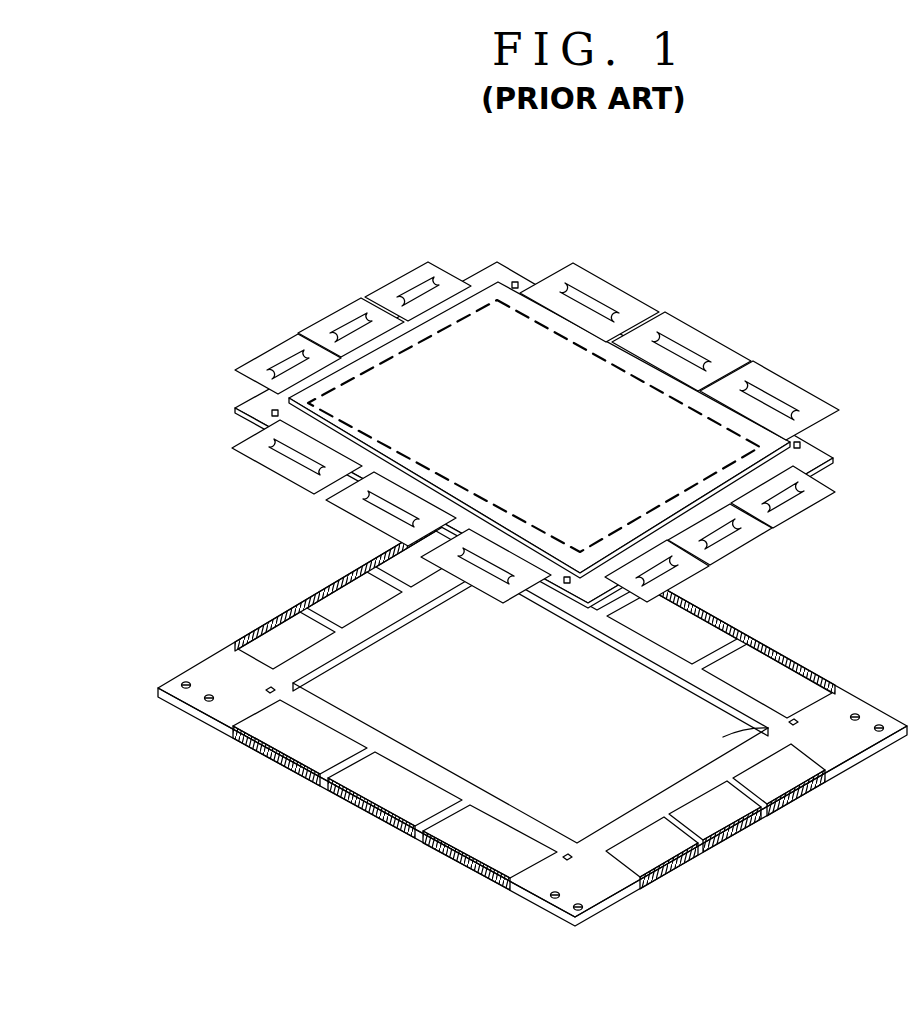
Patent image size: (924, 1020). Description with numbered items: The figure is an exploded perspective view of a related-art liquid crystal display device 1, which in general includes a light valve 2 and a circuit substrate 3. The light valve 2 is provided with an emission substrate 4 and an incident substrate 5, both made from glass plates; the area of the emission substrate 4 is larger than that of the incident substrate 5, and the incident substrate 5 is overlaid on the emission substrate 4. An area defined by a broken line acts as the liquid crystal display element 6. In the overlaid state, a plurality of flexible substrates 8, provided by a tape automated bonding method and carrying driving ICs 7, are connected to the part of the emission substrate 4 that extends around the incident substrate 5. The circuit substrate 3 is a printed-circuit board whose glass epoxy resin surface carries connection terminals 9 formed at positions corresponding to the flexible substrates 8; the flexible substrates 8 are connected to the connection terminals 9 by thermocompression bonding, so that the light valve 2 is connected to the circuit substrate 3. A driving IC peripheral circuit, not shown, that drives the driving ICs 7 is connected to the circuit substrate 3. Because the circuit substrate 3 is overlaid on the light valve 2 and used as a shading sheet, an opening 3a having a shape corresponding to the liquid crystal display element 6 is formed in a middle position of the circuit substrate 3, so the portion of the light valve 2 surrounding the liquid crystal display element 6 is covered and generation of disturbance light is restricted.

The liquid crystal display device 1 is at (710, 137).
The light valve 2 is at (556, 405).
The circuit substrate 3 is at (795, 657).
The opening 3a is at (828, 745).
The emission substrate 4 is at (803, 443).
The incident substrate 5 is at (490, 295).
The liquid crystal display element 6 is at (542, 387).
The driving IC 7 is at (293, 366).
The flexible substrate 8 is at (397, 268).
The connection terminal 9 is at (387, 551).